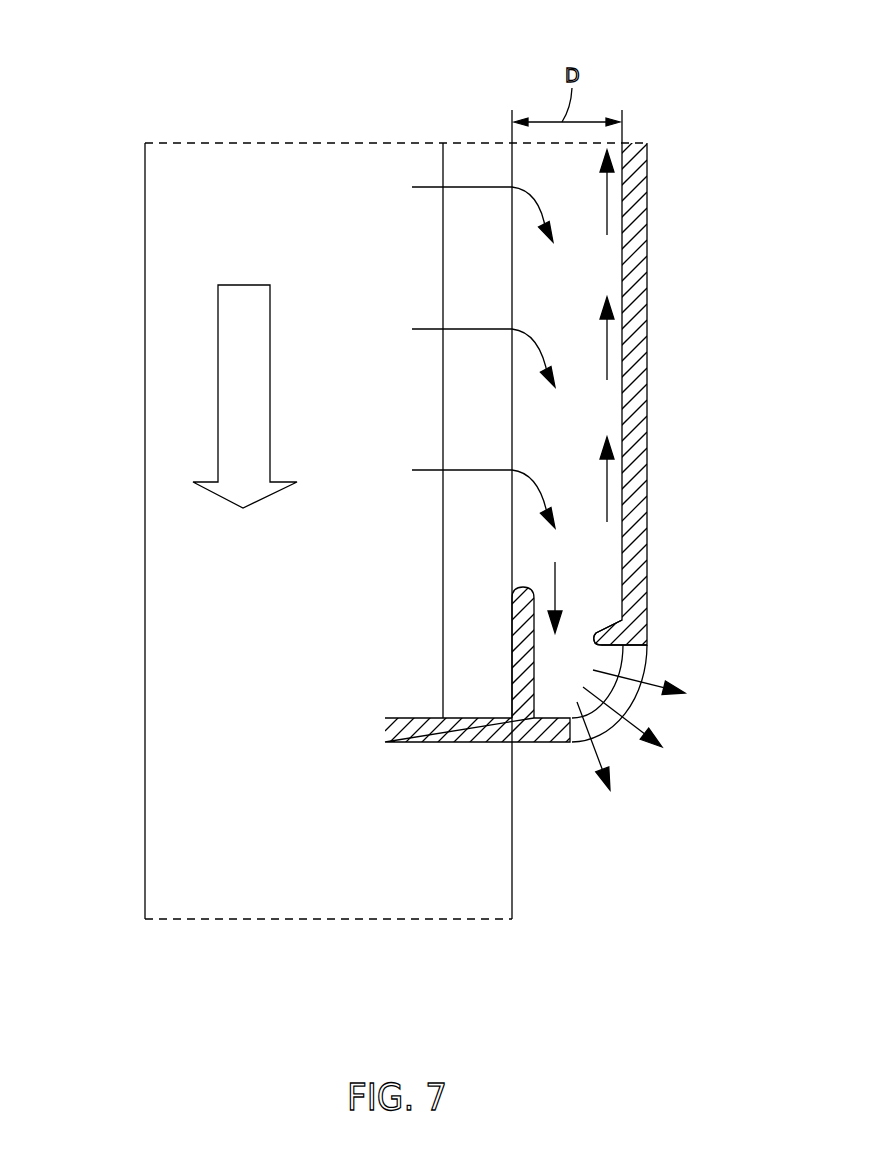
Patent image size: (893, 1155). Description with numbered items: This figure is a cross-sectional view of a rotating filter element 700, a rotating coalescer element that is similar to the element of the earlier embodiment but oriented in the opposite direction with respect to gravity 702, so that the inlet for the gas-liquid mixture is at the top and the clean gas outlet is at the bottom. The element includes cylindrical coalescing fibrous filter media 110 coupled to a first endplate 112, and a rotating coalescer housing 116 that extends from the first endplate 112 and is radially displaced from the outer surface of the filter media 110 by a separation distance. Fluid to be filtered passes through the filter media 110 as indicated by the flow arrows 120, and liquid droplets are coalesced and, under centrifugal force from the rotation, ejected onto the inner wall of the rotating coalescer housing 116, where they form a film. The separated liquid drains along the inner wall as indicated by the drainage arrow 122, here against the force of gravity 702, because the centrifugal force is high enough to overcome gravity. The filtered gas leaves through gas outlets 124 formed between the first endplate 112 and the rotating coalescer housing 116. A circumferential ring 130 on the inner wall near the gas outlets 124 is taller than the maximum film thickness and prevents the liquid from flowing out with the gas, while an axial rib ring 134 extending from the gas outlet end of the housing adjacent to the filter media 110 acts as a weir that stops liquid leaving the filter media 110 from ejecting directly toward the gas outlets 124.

The rotating filter element 700 is at (143, 62).
The gravity 702 is at (230, 407).
The filter media 110 is at (463, 372).
The first endplate 112 is at (445, 730).
The rotating coalescer housing 116 is at (643, 403).
The flow arrows 120 is at (637, 723).
The drainage arrow 122 is at (610, 337).
The gas outlets 124 is at (655, 655).
The circumferential ring 130 is at (638, 630).
The axial rib ring 134 is at (518, 658).